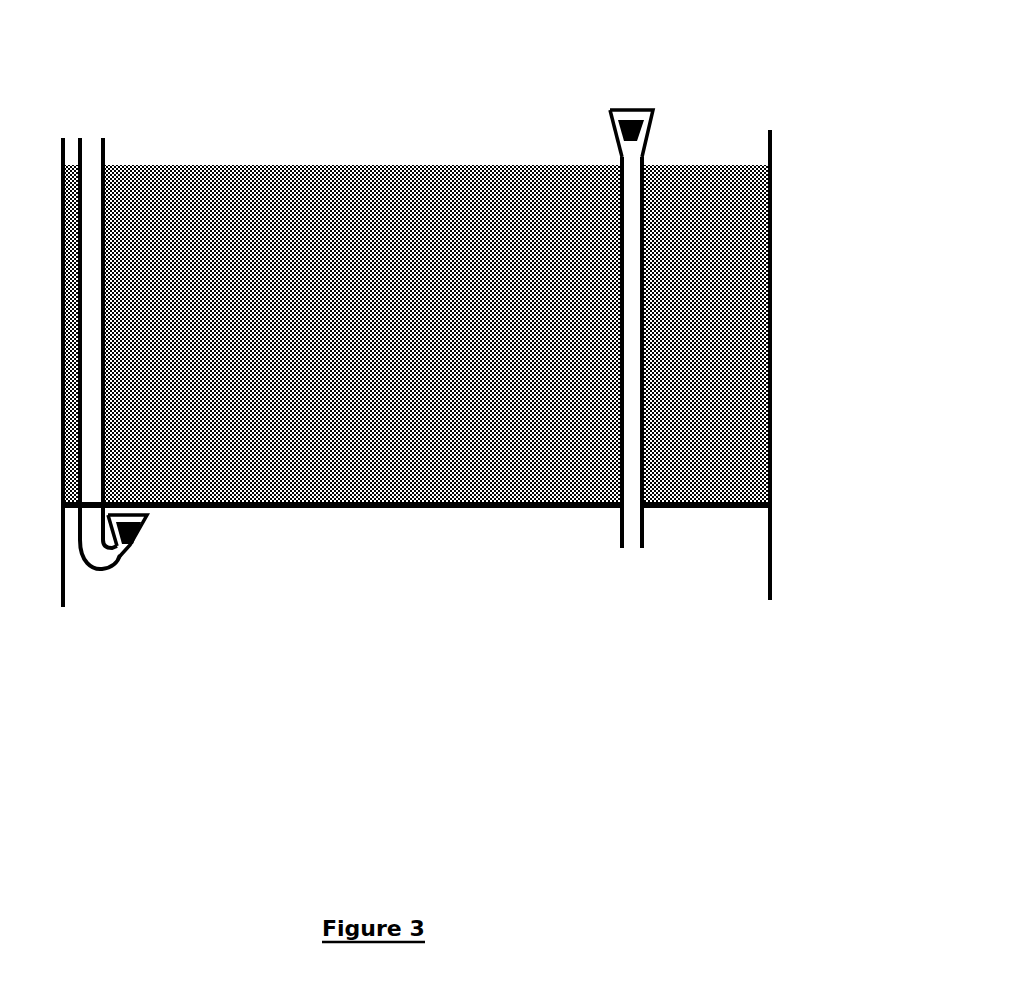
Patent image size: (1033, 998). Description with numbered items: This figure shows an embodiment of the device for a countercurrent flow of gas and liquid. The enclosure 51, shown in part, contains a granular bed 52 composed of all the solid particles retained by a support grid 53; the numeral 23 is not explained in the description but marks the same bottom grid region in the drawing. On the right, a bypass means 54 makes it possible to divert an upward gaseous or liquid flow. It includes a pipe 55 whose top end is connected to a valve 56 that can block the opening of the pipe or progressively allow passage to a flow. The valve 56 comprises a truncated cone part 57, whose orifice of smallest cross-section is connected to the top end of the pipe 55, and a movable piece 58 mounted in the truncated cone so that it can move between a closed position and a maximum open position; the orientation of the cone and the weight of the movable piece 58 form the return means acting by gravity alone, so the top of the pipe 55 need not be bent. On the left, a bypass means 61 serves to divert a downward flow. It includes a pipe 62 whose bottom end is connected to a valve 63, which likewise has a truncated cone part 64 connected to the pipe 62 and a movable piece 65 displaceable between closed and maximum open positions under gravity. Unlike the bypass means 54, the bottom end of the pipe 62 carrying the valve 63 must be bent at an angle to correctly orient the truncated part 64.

The bottom plate 23 is at (330, 508).
The enclosure 51 is at (770, 540).
The granular bed 52 is at (710, 327).
The support grid 53 is at (510, 508).
The bypass means 54 is at (682, 225).
The pipe 55 is at (650, 403).
The valve 56 is at (636, 280).
The truncated cone part 57 is at (650, 135).
The movable piece 58 is at (641, 117).
The bypass means 61 is at (120, 224).
The pipe 62 is at (104, 148).
The valve 63 is at (162, 554).
The truncated cone part 64 is at (145, 525).
The movable piece 65 is at (124, 548).